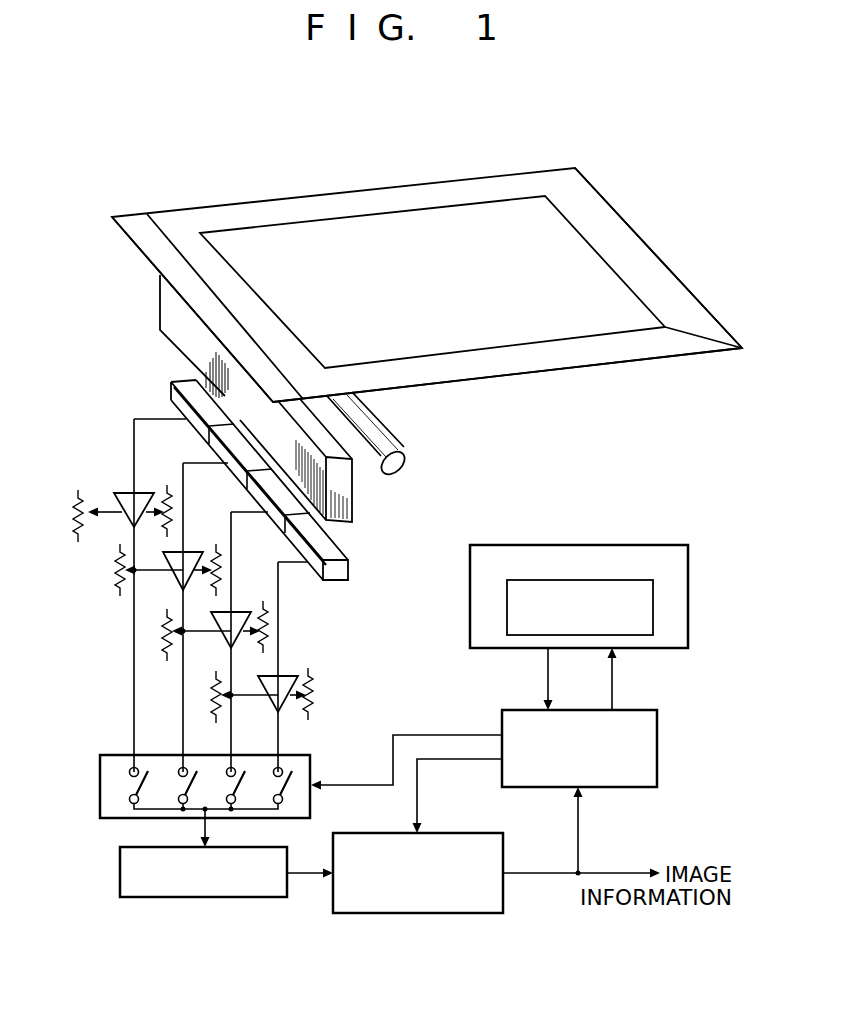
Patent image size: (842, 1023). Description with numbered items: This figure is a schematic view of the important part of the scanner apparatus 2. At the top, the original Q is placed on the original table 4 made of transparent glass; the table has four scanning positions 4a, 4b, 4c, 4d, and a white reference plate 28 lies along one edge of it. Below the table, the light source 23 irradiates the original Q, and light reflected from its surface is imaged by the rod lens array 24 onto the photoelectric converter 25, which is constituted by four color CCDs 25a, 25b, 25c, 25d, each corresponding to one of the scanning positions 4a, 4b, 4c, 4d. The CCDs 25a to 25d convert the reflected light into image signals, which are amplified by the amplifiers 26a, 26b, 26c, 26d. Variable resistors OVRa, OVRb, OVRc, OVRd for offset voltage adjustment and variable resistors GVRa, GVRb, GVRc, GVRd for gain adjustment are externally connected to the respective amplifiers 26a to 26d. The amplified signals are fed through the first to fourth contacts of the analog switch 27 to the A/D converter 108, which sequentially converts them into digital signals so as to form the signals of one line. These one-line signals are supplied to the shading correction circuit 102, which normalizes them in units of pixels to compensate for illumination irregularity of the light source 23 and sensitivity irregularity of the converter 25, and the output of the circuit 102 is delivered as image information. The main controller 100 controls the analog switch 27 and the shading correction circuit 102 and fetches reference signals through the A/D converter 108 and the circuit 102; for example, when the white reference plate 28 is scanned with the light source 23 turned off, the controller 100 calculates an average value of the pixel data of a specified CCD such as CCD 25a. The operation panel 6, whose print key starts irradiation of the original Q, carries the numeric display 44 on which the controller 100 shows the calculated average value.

The scanner apparatus 2 is at (142, 374).
The original table 4 is at (425, 263).
The scanning position 4a is at (308, 389).
The scanning position 4b is at (673, 305).
The scanning position 4c is at (606, 228).
The scanning position 4d is at (188, 243).
The original Q is at (501, 238).
The white reference plate 28 is at (131, 214).
The light source 23 is at (408, 463).
The rod lens array 24 is at (353, 503).
The photoelectric converter 25 is at (269, 497).
The color CCD 25a is at (318, 574).
The color CCD 25b is at (282, 518).
The color CCD 25c is at (238, 470).
The color CCD 25d is at (188, 430).
The amplifier 26a is at (283, 703).
The amplifier 26b is at (240, 634).
The amplifier 26c is at (180, 577).
The amplifier 26d is at (145, 490).
The variable resistor OVRa is at (213, 717).
The variable resistor OVRb is at (163, 650).
The variable resistor OVRc is at (117, 577).
The variable resistor OVRd is at (78, 490).
The variable resistor GVRa is at (316, 680).
The variable resistor GVRb is at (280, 620).
The variable resistor GVRc is at (217, 560).
The variable resistor GVRd is at (168, 502).
The analog switch 27 is at (310, 762).
The operation panel 6 is at (579, 608).
The numeric display 44 is at (633, 629).
The main controller 100 is at (624, 777).
The shading correction circuit 102 is at (462, 903).
The A/D converter 108 is at (237, 890).